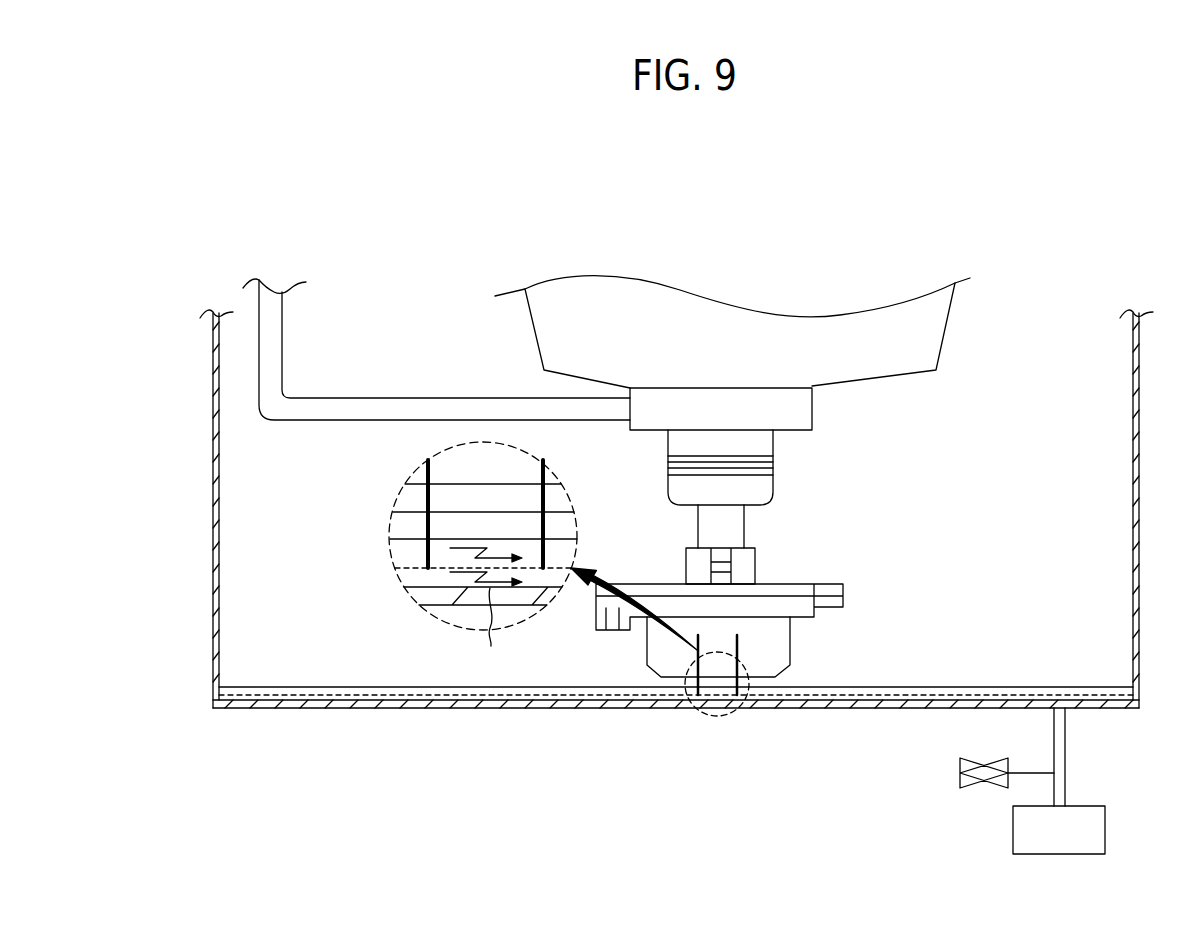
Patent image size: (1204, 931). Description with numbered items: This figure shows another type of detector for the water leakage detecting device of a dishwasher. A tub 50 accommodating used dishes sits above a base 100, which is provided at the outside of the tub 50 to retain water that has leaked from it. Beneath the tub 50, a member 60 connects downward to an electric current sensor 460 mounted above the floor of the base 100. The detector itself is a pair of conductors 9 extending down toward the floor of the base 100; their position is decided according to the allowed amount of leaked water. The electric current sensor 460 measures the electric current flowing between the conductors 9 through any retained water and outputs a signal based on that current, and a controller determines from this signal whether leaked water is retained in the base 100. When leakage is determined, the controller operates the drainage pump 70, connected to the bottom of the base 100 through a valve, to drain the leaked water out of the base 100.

The tub 50 is at (927, 345).
The connecting shaft 60 is at (772, 467).
The electric current sensor 460 is at (747, 567).
The conductors 9 is at (425, 524).
The base 100 is at (465, 708).
The drainage pump 70 is at (1013, 832).